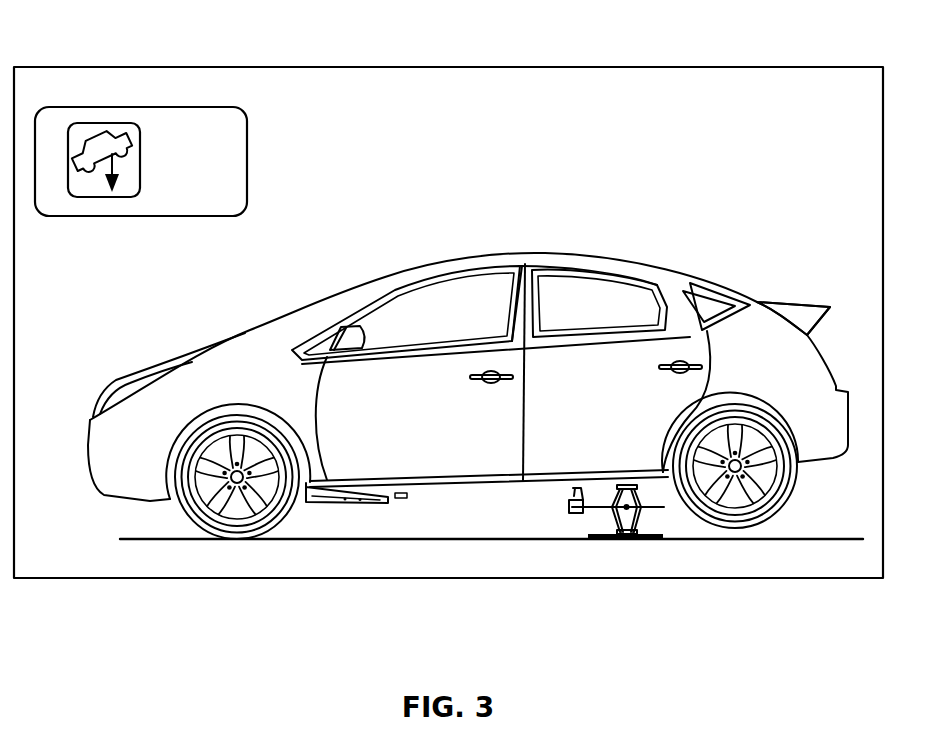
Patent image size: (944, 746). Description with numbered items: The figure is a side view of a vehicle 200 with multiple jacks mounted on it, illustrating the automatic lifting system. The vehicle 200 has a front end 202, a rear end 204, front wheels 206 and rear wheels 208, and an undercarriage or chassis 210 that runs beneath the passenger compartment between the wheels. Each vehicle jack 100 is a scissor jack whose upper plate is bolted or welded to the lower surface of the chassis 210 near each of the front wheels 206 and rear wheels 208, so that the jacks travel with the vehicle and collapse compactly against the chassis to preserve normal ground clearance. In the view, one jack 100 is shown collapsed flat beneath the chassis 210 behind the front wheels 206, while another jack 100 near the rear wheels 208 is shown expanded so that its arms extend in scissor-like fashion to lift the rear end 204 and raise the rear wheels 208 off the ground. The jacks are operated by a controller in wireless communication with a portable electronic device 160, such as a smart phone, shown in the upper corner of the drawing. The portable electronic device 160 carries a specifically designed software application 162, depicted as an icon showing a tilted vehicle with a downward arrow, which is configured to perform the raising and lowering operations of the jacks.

The vehicle jack 100 is at (370, 520).
The portable electronic device 160 is at (202, 97).
The software application 162 is at (105, 122).
The vehicle 200 is at (468, 340).
The front end 202 is at (161, 357).
The rear end 204 is at (793, 306).
The front wheels 206 is at (239, 552).
The rear wheels 208 is at (772, 531).
The undercarriage or chassis 210 is at (500, 489).